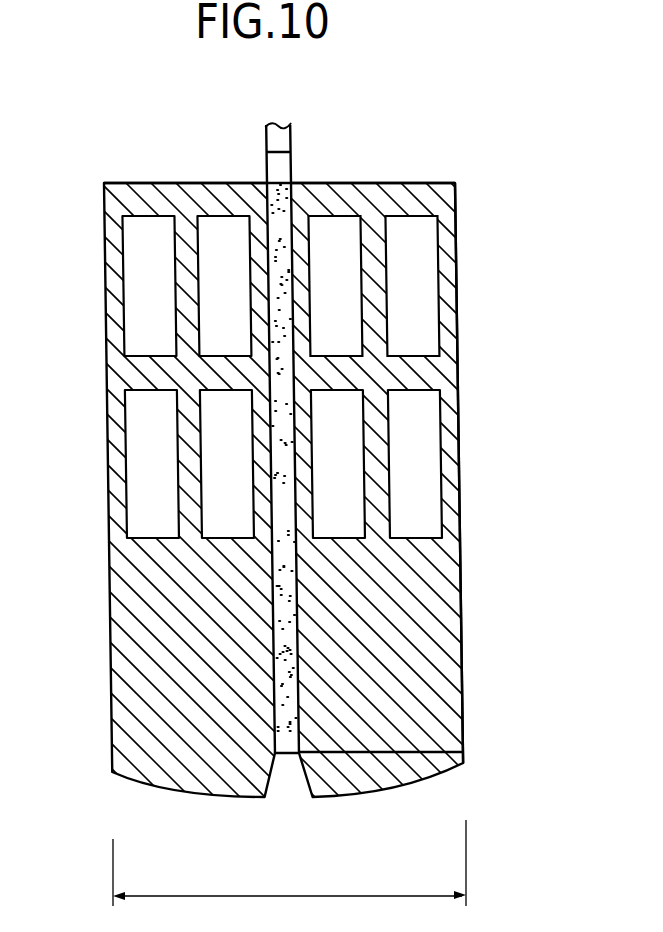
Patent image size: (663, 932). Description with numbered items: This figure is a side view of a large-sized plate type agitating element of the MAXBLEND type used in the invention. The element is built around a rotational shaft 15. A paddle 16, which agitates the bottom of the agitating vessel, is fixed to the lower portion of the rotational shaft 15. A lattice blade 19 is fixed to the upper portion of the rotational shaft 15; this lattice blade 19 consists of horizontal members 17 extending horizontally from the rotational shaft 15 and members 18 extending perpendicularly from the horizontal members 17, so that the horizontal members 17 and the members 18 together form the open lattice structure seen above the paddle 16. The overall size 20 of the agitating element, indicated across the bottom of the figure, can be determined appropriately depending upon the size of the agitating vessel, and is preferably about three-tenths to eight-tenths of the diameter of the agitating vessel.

The rotational shaft 15 is at (263, 151).
The paddle 16 is at (138, 733).
The horizontal members 17 is at (414, 186).
The members 18 is at (453, 447).
The lattice blade 19 is at (373, 363).
The size 20 is at (289, 863).